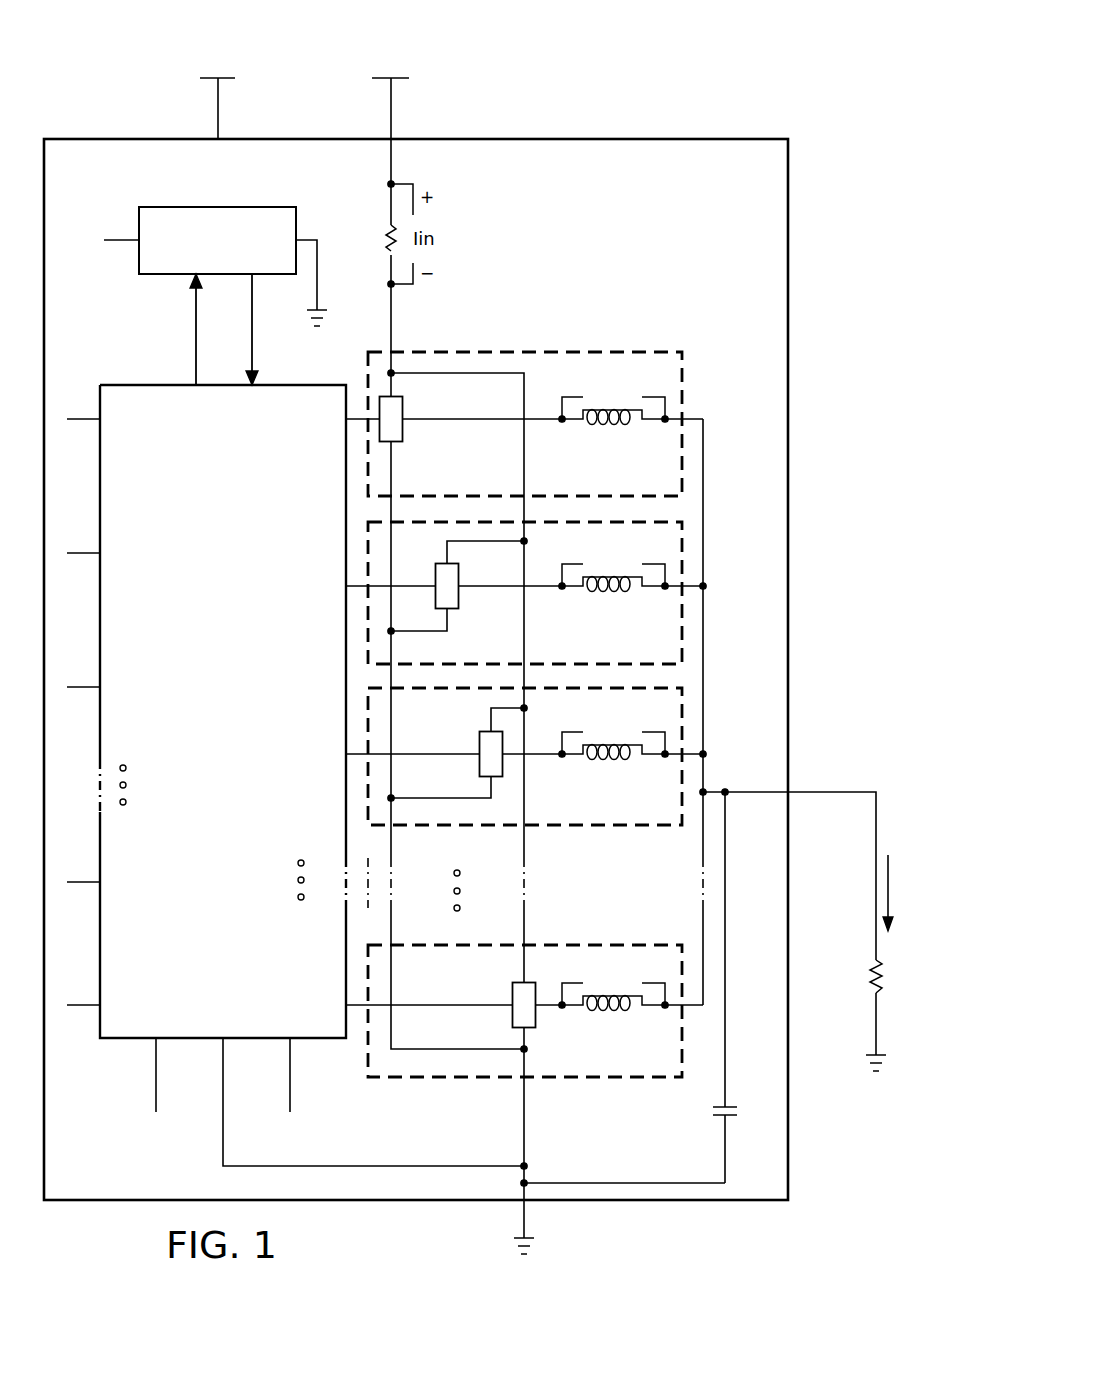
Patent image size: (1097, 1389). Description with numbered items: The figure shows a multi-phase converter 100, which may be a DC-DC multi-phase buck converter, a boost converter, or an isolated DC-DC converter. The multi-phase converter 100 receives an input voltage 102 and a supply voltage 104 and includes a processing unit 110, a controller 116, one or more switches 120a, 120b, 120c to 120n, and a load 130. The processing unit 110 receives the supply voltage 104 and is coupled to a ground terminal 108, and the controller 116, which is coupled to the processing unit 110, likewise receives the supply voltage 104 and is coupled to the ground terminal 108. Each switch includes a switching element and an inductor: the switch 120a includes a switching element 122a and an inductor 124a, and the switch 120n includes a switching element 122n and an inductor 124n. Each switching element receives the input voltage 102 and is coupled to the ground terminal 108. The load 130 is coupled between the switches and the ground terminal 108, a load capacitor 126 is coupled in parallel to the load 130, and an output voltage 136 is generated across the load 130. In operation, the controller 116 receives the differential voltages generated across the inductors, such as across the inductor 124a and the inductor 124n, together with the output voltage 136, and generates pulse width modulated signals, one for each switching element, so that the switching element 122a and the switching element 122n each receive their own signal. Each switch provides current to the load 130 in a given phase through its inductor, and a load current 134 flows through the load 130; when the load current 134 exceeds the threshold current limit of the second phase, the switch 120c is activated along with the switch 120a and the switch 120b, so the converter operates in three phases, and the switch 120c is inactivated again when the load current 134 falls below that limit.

The multi-phase converter 100 is at (668, 76).
The input voltage Vin 102 is at (400, 85).
The supply voltage Vdd 104 is at (210, 84).
The ground terminal GND 108 is at (330, 322).
The processing unit 110 is at (216, 206).
The controller 116 is at (162, 383).
The switch 120a is at (524, 392).
The switch 120b is at (633, 646).
The switch 120c is at (597, 834).
The switch 120n is at (524, 1043).
The switching element 122a is at (403, 429).
The switching element 122n is at (511, 996).
The inductor 124a is at (618, 425).
The inductor 124n is at (618, 1011).
The load capacitor Co 126 is at (711, 1107).
The load Ro 130 is at (882, 977).
The load current Io 134 is at (890, 900).
The output voltage Vo 136 is at (836, 797).